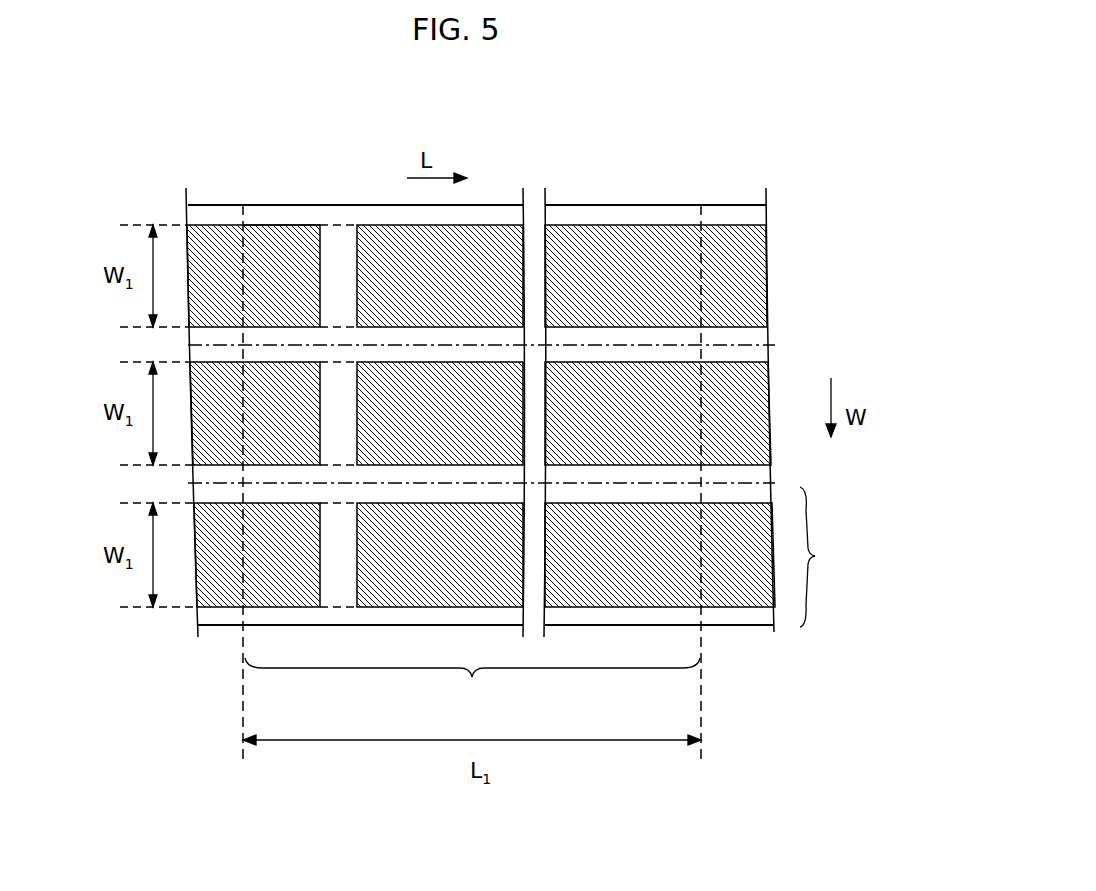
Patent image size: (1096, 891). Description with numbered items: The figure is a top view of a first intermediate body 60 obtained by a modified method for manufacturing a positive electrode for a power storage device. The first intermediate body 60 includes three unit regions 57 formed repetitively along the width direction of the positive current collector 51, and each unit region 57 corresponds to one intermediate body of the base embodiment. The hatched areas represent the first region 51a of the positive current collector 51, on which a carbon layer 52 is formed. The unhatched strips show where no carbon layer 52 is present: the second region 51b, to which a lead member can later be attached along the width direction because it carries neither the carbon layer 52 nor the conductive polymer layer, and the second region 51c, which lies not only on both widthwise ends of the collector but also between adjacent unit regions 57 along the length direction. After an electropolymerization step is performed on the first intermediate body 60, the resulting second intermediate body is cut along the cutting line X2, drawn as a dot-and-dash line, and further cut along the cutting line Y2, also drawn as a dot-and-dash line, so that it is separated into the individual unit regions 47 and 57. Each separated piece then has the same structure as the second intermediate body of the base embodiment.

The unit region 47 is at (472, 690).
The positive current collector 51 is at (758, 620).
The first region 51a is at (300, 245).
The second region 51b is at (340, 258).
The second region 51c is at (478, 213).
The carbon layer 52 is at (642, 258).
The unit region 57 is at (825, 557).
The first intermediate body 60 is at (772, 173).
The cutting line X2 is at (243, 218).
The cutting line Y2 is at (735, 345).